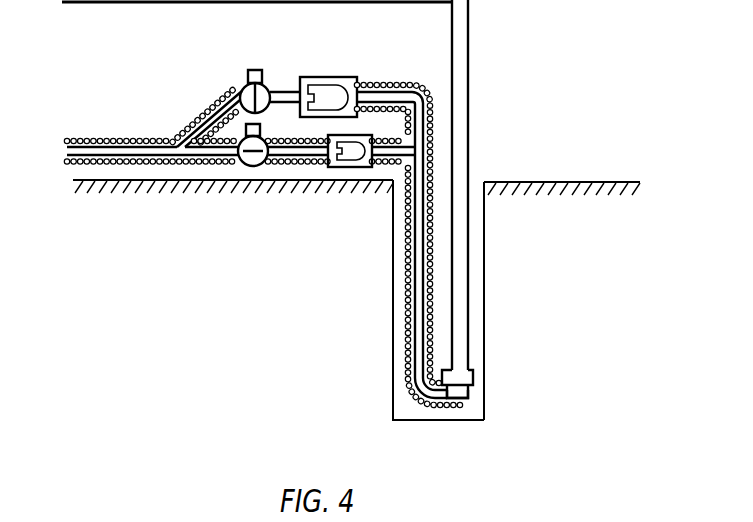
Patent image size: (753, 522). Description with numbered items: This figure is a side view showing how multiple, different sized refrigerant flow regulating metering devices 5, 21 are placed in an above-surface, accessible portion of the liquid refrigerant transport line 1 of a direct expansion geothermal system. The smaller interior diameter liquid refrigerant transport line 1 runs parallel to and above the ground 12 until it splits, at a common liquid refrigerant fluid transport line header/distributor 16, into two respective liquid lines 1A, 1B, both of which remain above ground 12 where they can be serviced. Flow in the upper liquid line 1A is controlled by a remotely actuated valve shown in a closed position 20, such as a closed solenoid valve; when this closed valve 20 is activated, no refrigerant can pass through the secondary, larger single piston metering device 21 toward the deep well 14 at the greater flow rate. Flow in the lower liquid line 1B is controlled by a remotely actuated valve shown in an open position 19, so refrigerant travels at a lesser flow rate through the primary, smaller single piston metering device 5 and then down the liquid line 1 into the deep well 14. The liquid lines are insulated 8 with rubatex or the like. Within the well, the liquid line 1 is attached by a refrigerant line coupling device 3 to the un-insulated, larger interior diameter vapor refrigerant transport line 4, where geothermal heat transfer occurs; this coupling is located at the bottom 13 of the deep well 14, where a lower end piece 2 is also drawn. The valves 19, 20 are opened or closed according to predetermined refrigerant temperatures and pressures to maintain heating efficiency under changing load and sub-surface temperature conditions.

The liquid refrigerant transport line 1 is at (416, 230).
The upper liquid line 1A is at (217, 100).
The lower liquid line 1B is at (198, 158).
The lower end piece 2 is at (468, 402).
The refrigerant line coupling device 3 is at (480, 374).
The vapor/fluid refrigerant transport line 4 is at (462, 292).
The primary single piston metering device 5 is at (345, 167).
The insulation 8 is at (408, 278).
The ground 12 is at (588, 192).
The bottom of deep well 13 is at (398, 420).
The deep well 14 is at (484, 229).
The liquid refrigerant fluid transport line header/distributor 16 is at (172, 140).
The remotely actuated valve in open position 19 is at (252, 168).
The remotely actuated valve in closed position 20 is at (245, 82).
The secondary single piston metering device 21 is at (332, 92).